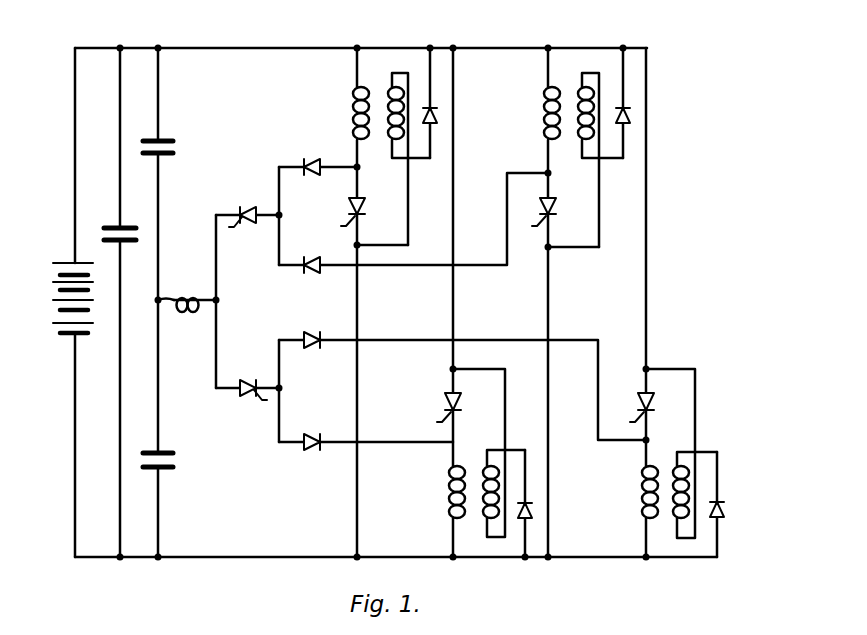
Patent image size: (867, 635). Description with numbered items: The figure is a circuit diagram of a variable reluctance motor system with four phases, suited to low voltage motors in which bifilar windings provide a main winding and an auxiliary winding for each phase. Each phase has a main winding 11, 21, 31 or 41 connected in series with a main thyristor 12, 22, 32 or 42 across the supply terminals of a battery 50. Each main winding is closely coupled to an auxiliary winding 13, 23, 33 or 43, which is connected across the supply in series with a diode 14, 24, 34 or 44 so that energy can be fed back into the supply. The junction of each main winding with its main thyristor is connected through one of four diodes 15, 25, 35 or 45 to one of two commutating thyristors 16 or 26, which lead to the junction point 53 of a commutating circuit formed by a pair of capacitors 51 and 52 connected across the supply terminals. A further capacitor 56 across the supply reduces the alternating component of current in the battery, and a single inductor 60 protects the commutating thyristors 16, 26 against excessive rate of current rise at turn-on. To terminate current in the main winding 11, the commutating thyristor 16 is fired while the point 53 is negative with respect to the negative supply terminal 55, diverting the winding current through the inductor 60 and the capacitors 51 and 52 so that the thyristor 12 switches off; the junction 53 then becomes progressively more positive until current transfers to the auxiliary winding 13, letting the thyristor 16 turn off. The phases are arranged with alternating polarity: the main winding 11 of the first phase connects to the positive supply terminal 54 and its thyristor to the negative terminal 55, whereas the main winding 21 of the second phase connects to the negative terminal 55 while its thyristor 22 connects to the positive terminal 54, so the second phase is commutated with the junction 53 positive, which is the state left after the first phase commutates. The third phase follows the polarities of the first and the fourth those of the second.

The main winding 11 is at (348, 112).
The main thyristor 12 is at (366, 206).
The auxiliary winding 13 is at (375, 172).
The diode 14 is at (440, 118).
The diode 15 is at (313, 160).
The commutating thyristor 16 is at (250, 208).
The main winding 21 is at (446, 494).
The main thyristor 22 is at (447, 393).
The auxiliary winding 23 is at (481, 466).
The diode 24 is at (537, 508).
The diode 25 is at (316, 435).
The commutating thyristor 26 is at (249, 380).
The main winding 31 is at (541, 107).
The main thyristor 32 is at (557, 207).
The auxiliary winding 33 is at (566, 170).
The diode 34 is at (630, 120).
The diode 35 is at (315, 257).
The main winding 41 is at (640, 498).
The main thyristor 42 is at (653, 405).
The auxiliary winding 43 is at (673, 466).
The diode 44 is at (723, 519).
The diode 45 is at (310, 333).
The battery 50 is at (63, 262).
The capacitor 51 is at (167, 140).
The capacitor 52 is at (171, 454).
The junction point 53 is at (163, 297).
The positive supply terminal 54 is at (291, 47).
The negative supply terminal 55 is at (307, 556).
The capacitor 56 is at (107, 226).
The inductor 60 is at (181, 311).